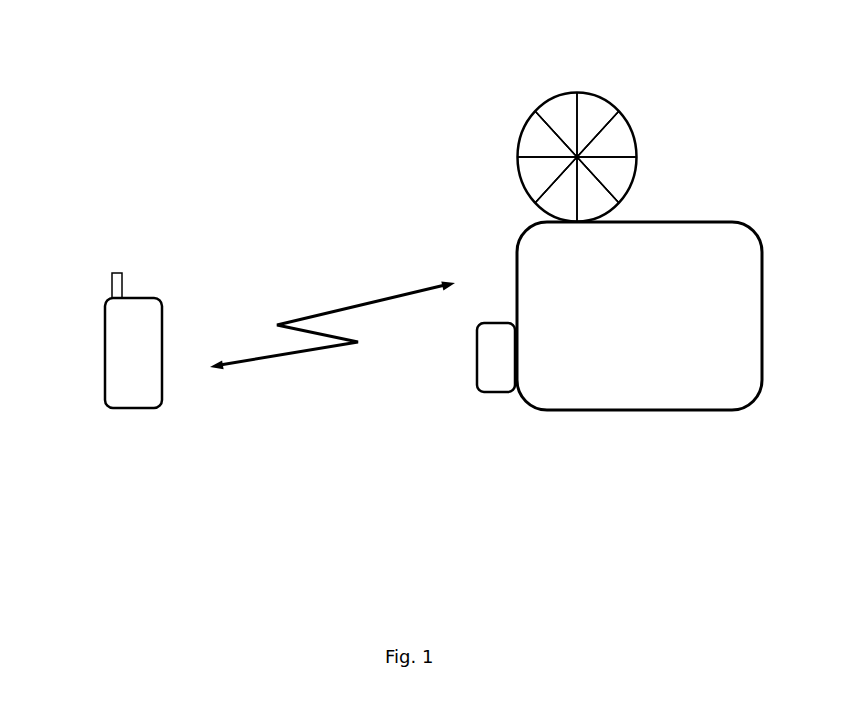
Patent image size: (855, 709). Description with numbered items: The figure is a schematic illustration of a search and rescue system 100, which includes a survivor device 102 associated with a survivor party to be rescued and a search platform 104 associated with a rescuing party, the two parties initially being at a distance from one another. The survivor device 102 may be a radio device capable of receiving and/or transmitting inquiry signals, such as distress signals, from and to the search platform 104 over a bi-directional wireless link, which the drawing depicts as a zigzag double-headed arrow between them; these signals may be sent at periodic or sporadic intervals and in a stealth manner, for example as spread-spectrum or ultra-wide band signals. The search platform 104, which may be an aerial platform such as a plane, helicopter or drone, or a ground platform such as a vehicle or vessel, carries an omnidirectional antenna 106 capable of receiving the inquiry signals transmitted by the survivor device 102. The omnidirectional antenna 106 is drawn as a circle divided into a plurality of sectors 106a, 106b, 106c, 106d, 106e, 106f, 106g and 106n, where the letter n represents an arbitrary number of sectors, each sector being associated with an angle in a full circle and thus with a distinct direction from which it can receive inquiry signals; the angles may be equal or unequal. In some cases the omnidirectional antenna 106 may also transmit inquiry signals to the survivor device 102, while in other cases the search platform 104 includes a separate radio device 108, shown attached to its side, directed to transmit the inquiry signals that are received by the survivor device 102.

The search and rescue system 100 is at (210, 111).
The survivor device 102 is at (105, 313).
The search platform 104 is at (717, 222).
The omnidirectional antenna 106 is at (528, 84).
The sector 106a is at (595, 117).
The sector 106b is at (612, 140).
The sector 106c is at (617, 170).
The sector 106d is at (597, 197).
The sector 106e is at (560, 207).
The sector 106f is at (535, 177).
The sector 106g is at (540, 143).
The sector 106n is at (559, 111).
The radio device 108 is at (477, 365).